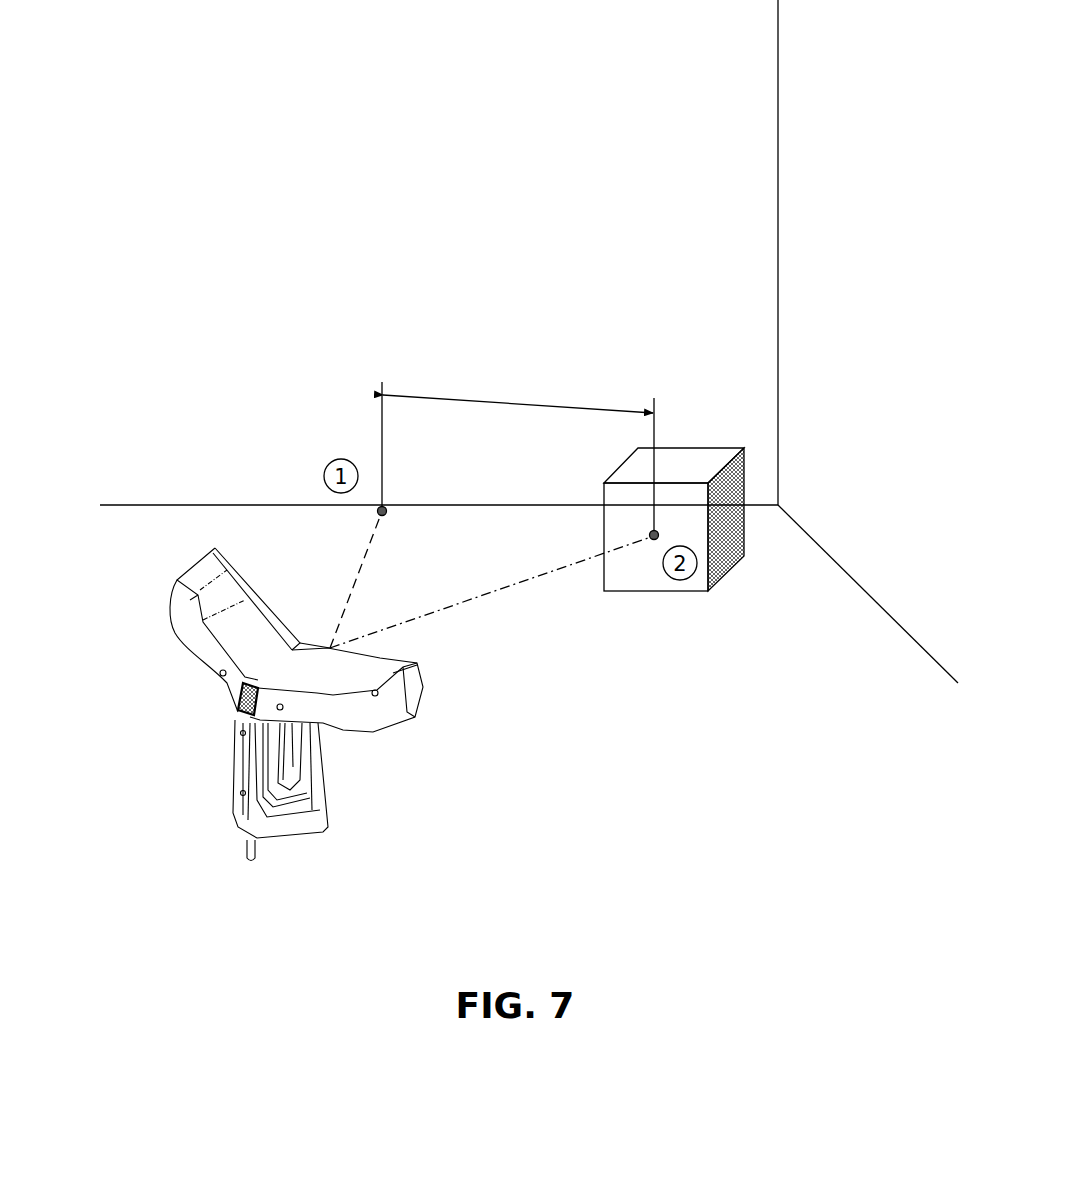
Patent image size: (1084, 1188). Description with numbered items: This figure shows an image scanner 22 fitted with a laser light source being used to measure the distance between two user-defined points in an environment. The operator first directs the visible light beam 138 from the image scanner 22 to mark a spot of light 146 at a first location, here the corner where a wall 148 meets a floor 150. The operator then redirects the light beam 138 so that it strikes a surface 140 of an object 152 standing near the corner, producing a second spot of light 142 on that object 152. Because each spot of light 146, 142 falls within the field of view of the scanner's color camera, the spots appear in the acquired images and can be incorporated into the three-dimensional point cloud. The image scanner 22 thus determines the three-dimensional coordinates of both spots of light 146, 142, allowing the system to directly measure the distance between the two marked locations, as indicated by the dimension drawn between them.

The image scanner 22 is at (126, 655).
The light beam 138 is at (343, 606).
The surface 140 is at (692, 554).
The spot of light 142 is at (657, 529).
The spot of light 146 is at (385, 508).
The wall 148 is at (390, 225).
The floor 150 is at (730, 704).
The object 152 is at (730, 547).